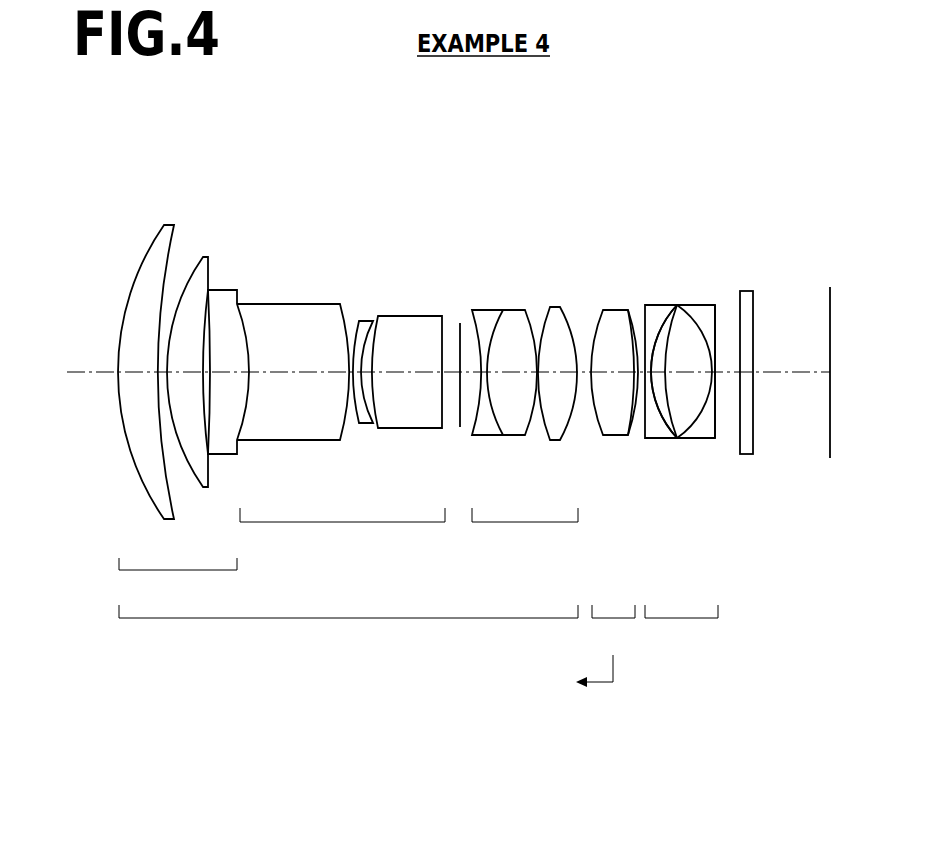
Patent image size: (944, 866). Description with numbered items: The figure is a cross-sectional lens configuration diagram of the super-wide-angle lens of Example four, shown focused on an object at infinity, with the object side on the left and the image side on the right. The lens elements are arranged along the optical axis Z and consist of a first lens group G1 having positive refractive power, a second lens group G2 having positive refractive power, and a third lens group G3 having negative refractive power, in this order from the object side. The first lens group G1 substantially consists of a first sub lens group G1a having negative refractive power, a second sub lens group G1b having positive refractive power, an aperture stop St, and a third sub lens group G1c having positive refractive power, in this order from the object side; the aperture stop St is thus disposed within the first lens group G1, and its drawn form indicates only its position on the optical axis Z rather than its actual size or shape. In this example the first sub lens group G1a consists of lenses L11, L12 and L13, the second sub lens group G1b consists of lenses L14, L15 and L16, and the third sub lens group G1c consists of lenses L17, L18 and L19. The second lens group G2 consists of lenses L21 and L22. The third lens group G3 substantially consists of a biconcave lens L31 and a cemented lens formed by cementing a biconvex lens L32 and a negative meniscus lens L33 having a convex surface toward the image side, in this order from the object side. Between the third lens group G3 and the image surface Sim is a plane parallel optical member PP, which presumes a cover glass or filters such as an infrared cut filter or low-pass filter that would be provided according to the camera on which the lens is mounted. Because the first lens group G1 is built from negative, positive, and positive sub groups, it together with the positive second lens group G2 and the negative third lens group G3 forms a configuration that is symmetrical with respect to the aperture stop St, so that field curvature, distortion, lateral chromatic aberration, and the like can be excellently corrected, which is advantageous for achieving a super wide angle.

The lens L11 is at (161, 230).
The lens L12 is at (206, 257).
The lens L13 is at (221, 292).
The lens L14 is at (292, 312).
The lens L15 is at (366, 320).
The lens L16 is at (408, 316).
The lens L17 is at (488, 310).
The lens L18 is at (507, 312).
The lens L19 is at (557, 308).
The lens L21 is at (605, 312).
The lens L22 is at (623, 312).
The biconcave lens L31 is at (657, 316).
The biconvex lens L32 is at (683, 320).
The negative meniscus lens L33 is at (703, 306).
The aperture stop St is at (459, 323).
The plane parallel optical member PP is at (747, 292).
The image surface Sim is at (830, 312).
The optical axis Z is at (88, 376).
The first lens group G1 is at (348, 626).
The first sub lens group G1a is at (178, 578).
The second sub lens group G1b is at (342, 529).
The third sub lens group G1c is at (525, 529).
The second lens group G2 is at (605, 646).
The third lens group G3 is at (681, 626).